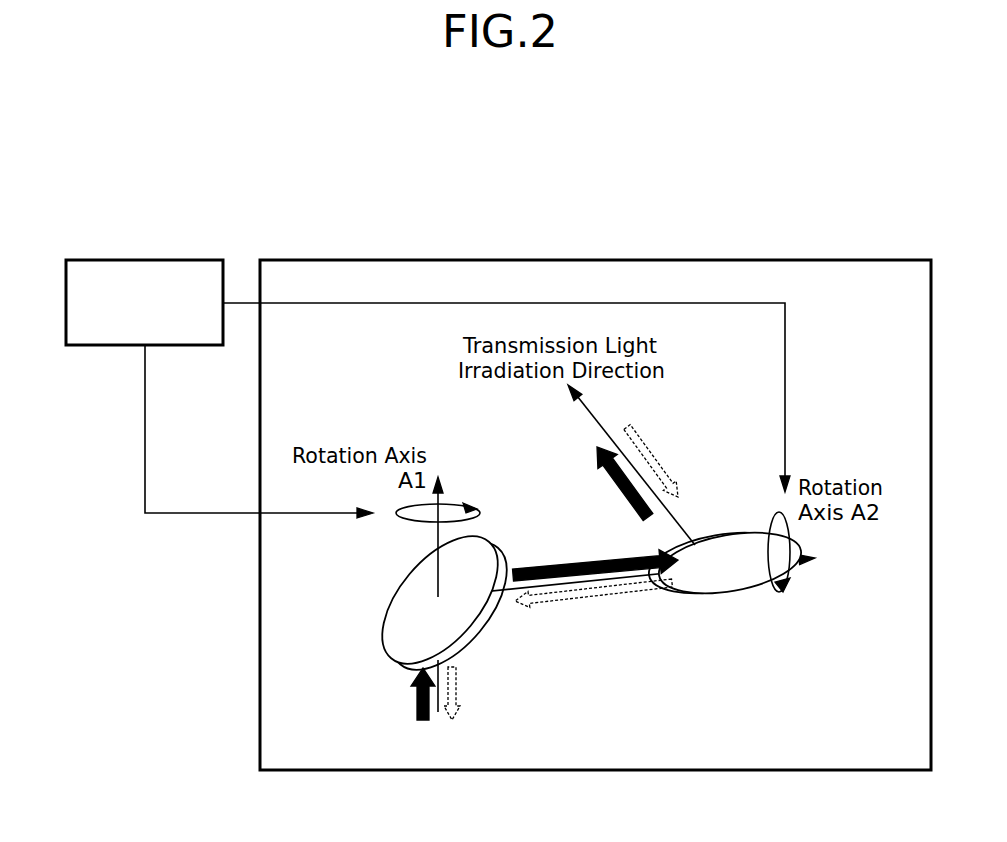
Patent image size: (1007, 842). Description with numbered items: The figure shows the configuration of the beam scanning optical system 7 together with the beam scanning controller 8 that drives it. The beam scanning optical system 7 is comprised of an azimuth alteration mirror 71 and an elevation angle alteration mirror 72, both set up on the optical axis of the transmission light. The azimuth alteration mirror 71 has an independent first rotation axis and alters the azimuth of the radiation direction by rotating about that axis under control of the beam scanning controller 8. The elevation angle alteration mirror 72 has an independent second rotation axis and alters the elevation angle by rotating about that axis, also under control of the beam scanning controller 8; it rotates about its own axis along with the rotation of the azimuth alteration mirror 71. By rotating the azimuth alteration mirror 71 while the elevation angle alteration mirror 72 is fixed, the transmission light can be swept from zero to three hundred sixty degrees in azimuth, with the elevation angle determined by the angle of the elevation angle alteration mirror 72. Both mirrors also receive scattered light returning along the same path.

The beam scanning optical system 7 is at (865, 770).
The beam scanning controller 8 is at (174, 260).
The azimuth alteration mirror 71 is at (399, 606).
The elevation angle alteration mirror 72 is at (727, 613).